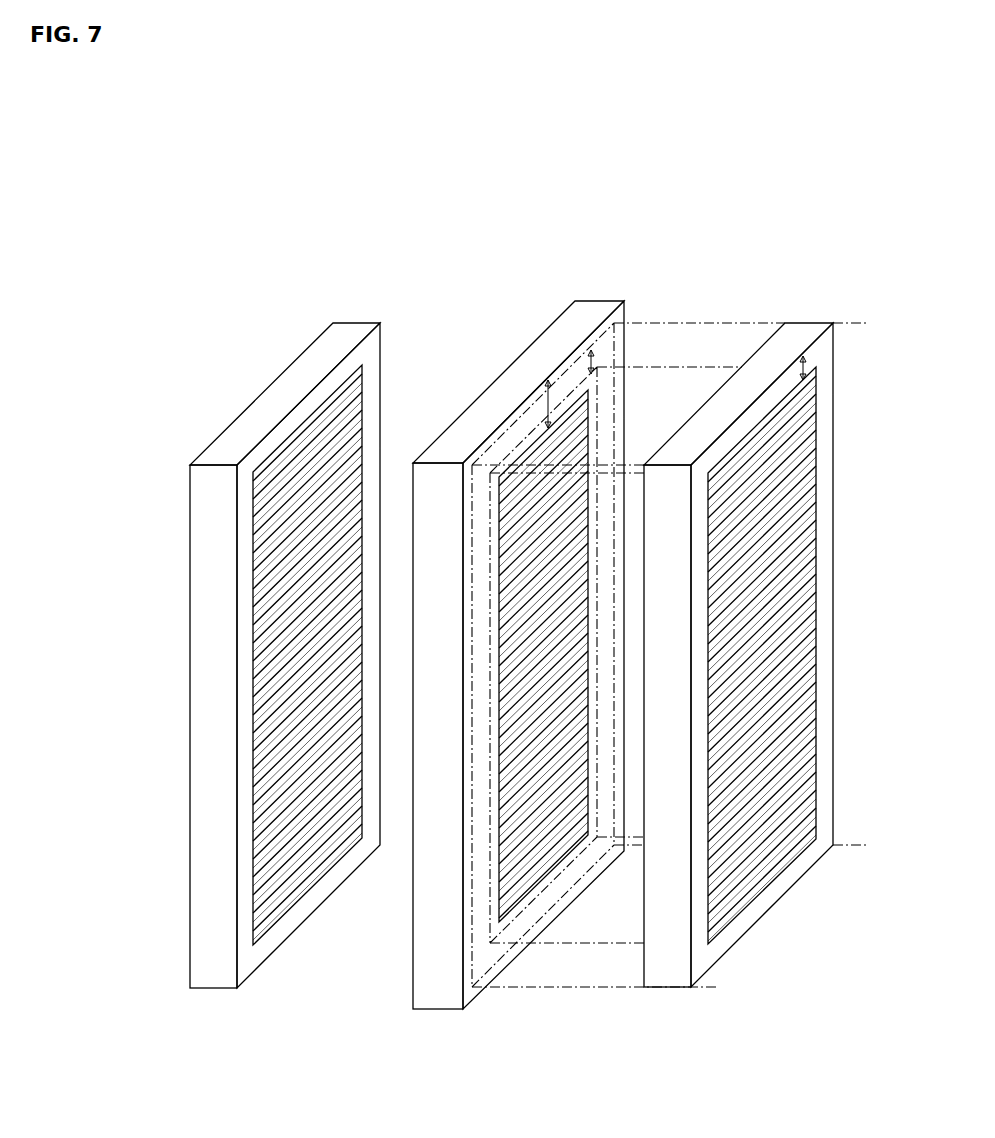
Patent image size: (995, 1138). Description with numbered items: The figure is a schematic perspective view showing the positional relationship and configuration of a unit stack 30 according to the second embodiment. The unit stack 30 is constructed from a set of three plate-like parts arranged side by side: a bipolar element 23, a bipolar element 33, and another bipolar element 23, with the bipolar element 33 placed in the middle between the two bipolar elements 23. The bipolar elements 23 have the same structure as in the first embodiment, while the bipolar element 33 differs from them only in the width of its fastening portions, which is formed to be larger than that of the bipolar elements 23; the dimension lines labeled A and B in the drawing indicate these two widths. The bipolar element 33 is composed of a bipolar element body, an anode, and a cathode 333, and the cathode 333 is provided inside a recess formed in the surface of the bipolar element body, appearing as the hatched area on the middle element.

The unit stack 30 is at (288, 178).
The bipolar element 23 is at (352, 333).
The bipolar element 33 is at (577, 335).
The cathode 333 is at (548, 790).